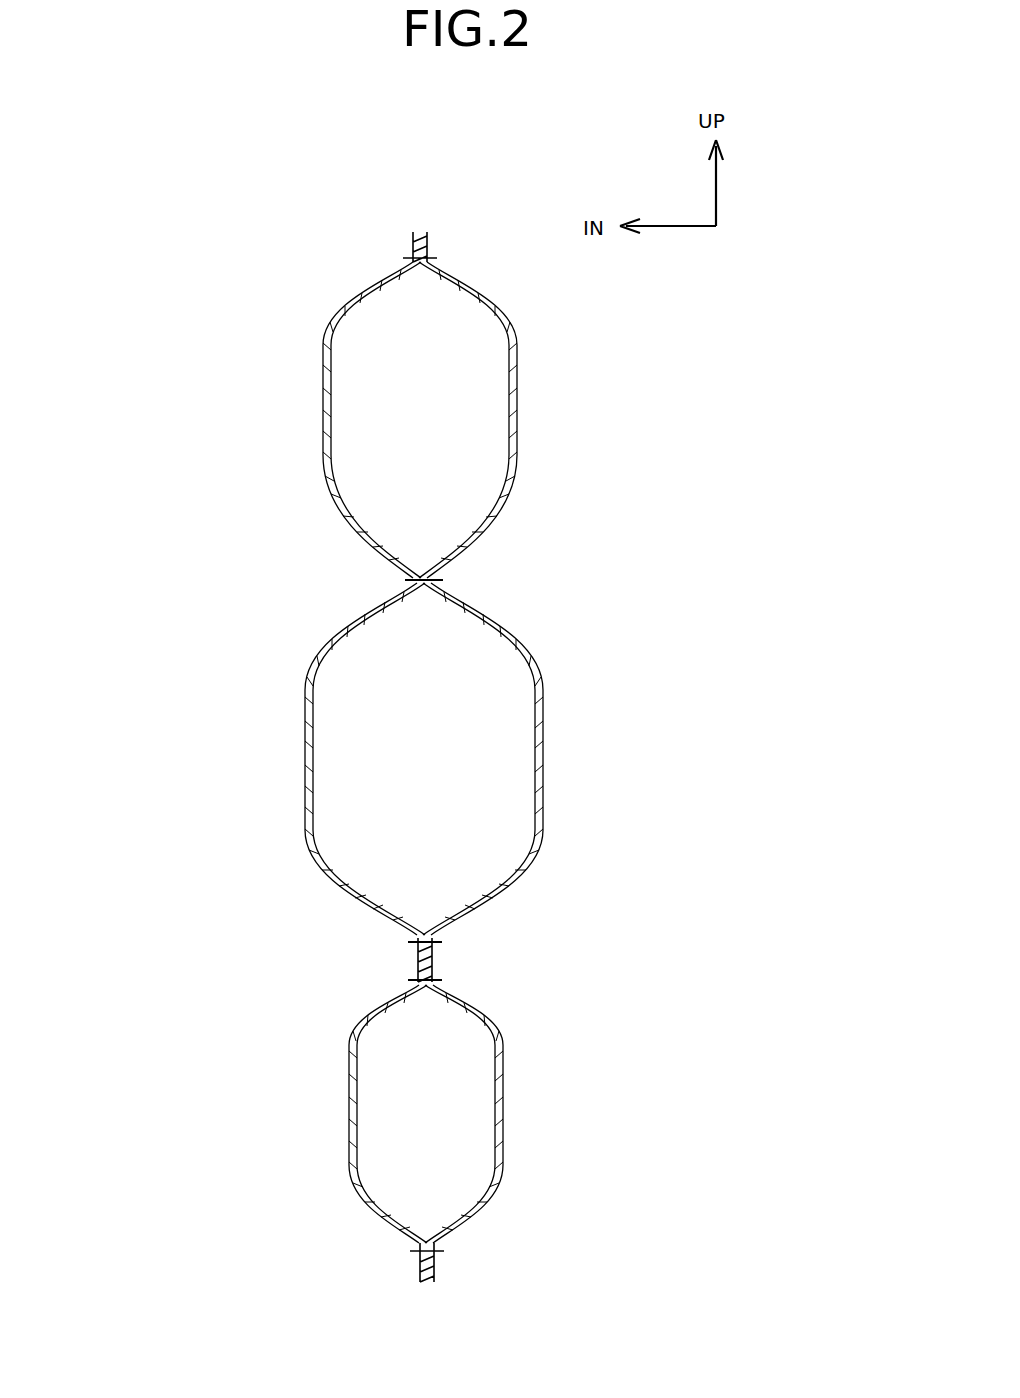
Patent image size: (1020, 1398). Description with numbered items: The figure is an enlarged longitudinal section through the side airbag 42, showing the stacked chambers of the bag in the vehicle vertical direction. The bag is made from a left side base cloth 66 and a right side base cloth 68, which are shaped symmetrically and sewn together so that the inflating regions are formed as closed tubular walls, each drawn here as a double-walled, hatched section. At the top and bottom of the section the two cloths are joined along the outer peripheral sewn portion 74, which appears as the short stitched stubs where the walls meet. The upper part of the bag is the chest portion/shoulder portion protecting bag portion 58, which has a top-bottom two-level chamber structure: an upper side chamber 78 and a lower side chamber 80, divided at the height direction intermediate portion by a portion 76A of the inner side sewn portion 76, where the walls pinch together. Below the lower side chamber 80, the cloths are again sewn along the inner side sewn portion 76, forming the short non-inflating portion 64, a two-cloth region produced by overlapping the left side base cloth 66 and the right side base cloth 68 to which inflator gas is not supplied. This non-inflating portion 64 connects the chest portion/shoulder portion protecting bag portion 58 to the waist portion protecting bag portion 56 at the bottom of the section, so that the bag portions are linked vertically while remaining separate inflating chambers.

The side airbag 42 is at (571, 428).
The outer peripheral sewn portion 74 is at (430, 257).
The upper side chamber 78 is at (438, 433).
The lower side chamber 80 is at (443, 790).
The portion of the inner side sewn portion 76A is at (416, 581).
The chest portion/shoulder portion protecting bag portion 58 is at (534, 630).
The left side base cloth 66 is at (541, 790).
The right side base cloth 68 is at (306, 786).
The non-inflating portion 64 is at (434, 965).
The inner side sewn portion 76 is at (411, 979).
The waist portion protecting bag portion 56 is at (519, 1148).